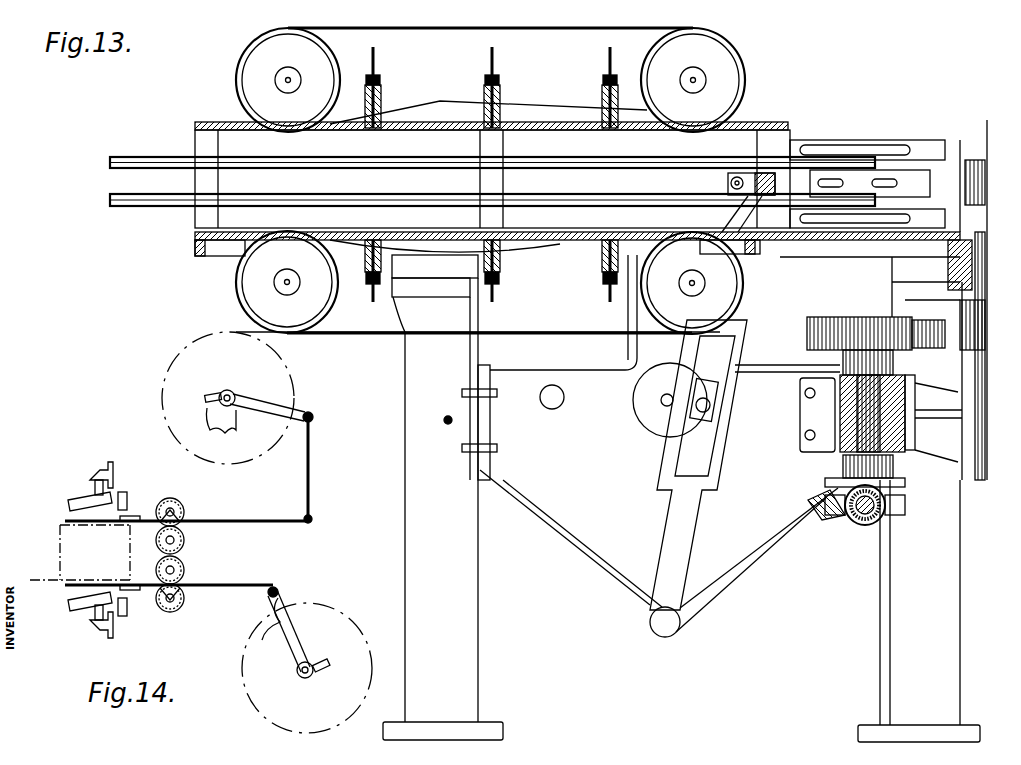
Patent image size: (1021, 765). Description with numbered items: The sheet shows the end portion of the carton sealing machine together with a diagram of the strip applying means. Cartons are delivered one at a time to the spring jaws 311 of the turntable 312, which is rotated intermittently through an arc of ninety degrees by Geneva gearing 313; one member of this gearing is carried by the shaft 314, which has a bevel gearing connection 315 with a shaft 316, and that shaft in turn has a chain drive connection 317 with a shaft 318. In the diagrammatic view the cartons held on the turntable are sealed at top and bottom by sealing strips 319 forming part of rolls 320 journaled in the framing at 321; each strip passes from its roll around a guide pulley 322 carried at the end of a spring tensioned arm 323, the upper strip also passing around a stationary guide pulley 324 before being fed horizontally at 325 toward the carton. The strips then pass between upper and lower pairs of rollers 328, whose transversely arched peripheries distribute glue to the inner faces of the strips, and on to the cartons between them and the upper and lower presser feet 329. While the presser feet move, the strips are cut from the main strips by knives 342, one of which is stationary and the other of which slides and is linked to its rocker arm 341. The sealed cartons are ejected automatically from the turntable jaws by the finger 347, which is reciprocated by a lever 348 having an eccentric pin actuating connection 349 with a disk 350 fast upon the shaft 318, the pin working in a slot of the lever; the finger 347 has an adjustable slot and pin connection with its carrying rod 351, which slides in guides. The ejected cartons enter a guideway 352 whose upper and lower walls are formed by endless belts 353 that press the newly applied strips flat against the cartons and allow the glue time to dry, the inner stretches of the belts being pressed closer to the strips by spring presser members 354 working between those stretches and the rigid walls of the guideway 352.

In FIG. 13, the spring jaws 311 is at (855, 142).
In FIG. 13, the turntable 312 is at (962, 142).
In FIG. 13, the Geneva gearing 313 is at (882, 317).
In FIG. 13, the shaft 314 is at (897, 450).
In FIG. 13, the bevel gearing connection 315 is at (906, 488).
In FIG. 13, the shaft 316 is at (864, 527).
In FIG. 13, the chain drive connection 317 is at (815, 518).
In FIG. 13, the shaft 318 is at (661, 402).
In FIG. 14, the sealing strips 319 is at (307, 477).
In FIG. 14, the rolls 320 is at (267, 532).
In FIG. 14, the journal in framing 321 is at (235, 398).
In FIG. 14, the guide pulleys 322 is at (303, 420).
In FIG. 14, the spring tensioned arms 323 is at (250, 408).
In FIG. 14, the stationary guide pulley 324 is at (310, 522).
In FIG. 14, the horizontal feed path 325 is at (278, 519).
In FIG. 14, the rollers 328 is at (183, 540).
In FIG. 14, the presser feet 329 is at (70, 503).
In FIG. 14, the rocker arm 341 is at (112, 474).
In FIG. 14, the knives 342 is at (128, 512).
In FIG. 13, the finger 347 is at (920, 173).
In FIG. 13, the lever 348 is at (694, 530).
In FIG. 13, the eccentric pin actuating connection 349 is at (706, 413).
In FIG. 13, the disk 350 is at (649, 435).
In FIG. 13, the carrying rod 351 is at (767, 177).
In FIG. 13, the guideway 352 is at (492, 179).
In FIG. 13, the endless belts 353 is at (525, 128).
In FIG. 13, the spring presser members 354 is at (598, 136).